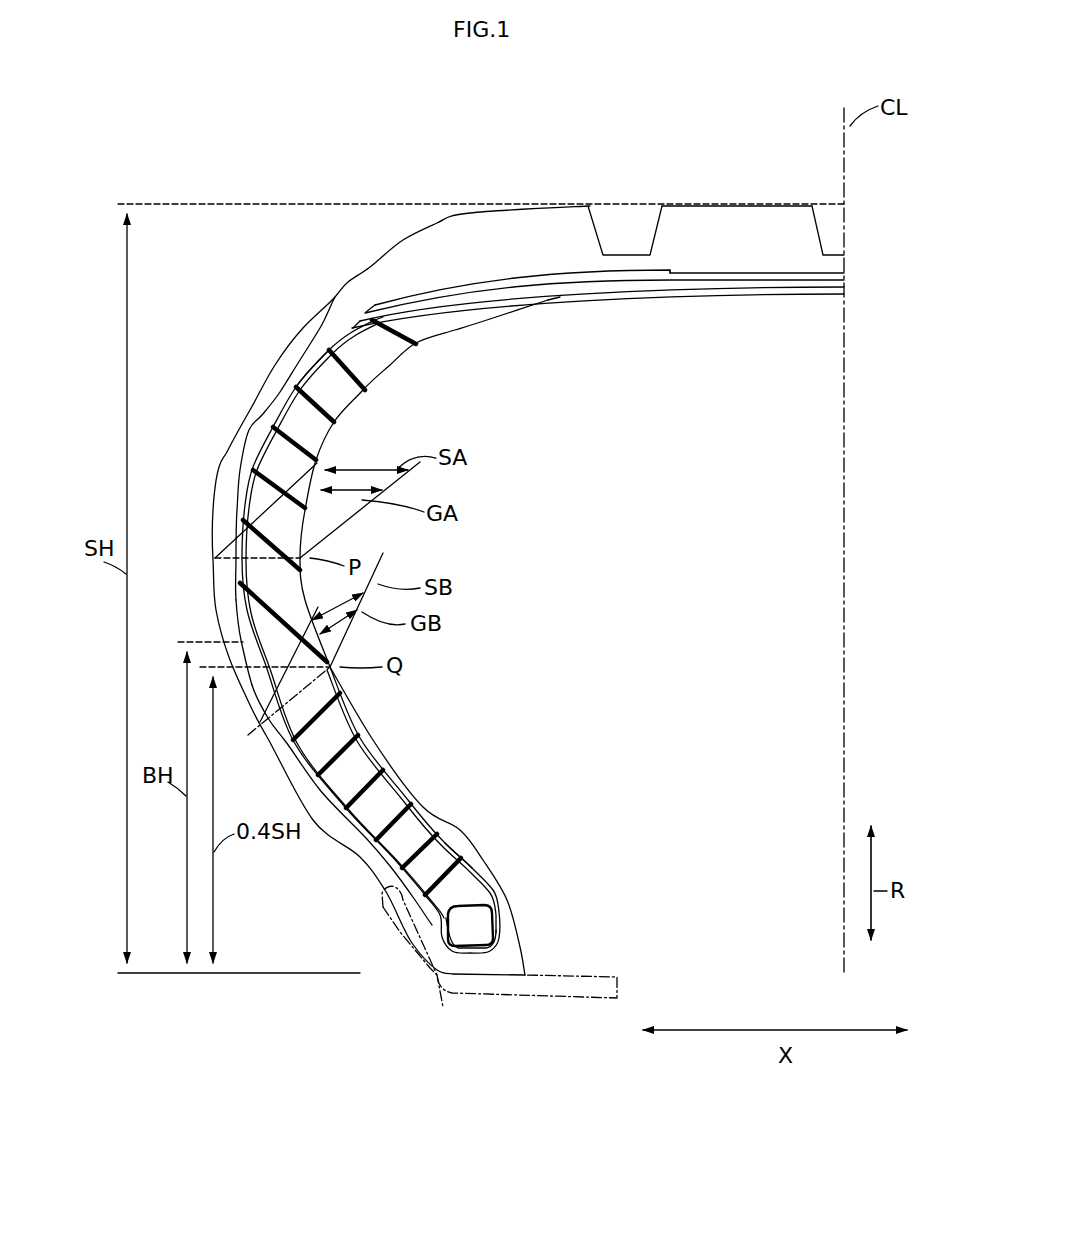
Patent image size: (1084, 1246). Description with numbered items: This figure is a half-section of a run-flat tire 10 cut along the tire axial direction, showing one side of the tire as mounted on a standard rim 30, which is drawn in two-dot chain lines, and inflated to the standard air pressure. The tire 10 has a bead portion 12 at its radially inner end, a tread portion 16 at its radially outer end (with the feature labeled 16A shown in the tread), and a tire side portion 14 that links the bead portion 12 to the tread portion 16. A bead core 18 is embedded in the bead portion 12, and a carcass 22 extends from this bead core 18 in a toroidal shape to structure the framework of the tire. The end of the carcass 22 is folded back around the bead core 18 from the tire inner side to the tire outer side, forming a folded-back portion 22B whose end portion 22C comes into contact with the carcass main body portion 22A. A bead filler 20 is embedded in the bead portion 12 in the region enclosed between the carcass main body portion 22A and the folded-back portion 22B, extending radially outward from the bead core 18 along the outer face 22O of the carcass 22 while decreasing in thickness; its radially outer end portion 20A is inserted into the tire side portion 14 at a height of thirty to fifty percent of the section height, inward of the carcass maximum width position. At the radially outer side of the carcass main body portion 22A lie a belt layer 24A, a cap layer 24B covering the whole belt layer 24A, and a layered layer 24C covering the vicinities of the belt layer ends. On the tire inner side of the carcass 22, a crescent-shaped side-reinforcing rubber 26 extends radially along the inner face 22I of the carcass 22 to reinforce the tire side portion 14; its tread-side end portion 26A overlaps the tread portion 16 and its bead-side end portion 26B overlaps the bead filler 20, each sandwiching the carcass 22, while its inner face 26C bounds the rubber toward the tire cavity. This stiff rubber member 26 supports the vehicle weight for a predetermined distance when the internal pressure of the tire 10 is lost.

The run-flat tire 10 is at (267, 158).
The bead portion 12 is at (529, 948).
The tire side portion 14 is at (206, 521).
The tread portion 16 is at (560, 201).
The circumferential groove 16A is at (603, 228).
The bead core 18 is at (468, 903).
The bead filler 20 is at (402, 814).
The end portion of the bead filler 20A is at (243, 640).
The carcass 22 is at (261, 419).
The carcass main body portion 22A is at (263, 450).
The folded-back portion 22B is at (347, 812).
The end portion of the folded-back portion 22C is at (238, 603).
The outer face of the carcass 22O is at (246, 478).
The inner face of the carcass 22I is at (238, 500).
The belt layer 24A is at (850, 292).
The cap layer 24B is at (848, 274).
The layered layer 24C is at (497, 268).
The side-reinforcing rubber 26 is at (400, 373).
The end portion of the side-reinforcing rubber at the tread side 26A is at (550, 306).
The end portion of the side-reinforcing rubber at the bead core side 26B is at (455, 832).
The inner surface of side reinforcing rubber 26C is at (352, 412).
The standard rim 30 is at (540, 1000).